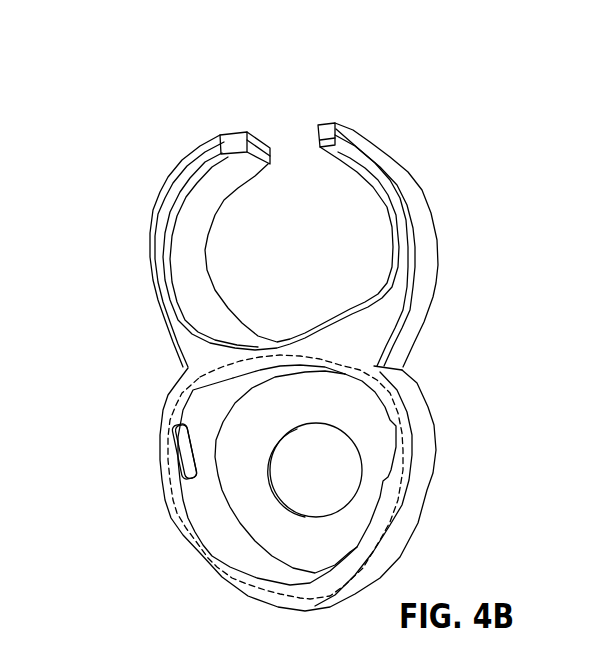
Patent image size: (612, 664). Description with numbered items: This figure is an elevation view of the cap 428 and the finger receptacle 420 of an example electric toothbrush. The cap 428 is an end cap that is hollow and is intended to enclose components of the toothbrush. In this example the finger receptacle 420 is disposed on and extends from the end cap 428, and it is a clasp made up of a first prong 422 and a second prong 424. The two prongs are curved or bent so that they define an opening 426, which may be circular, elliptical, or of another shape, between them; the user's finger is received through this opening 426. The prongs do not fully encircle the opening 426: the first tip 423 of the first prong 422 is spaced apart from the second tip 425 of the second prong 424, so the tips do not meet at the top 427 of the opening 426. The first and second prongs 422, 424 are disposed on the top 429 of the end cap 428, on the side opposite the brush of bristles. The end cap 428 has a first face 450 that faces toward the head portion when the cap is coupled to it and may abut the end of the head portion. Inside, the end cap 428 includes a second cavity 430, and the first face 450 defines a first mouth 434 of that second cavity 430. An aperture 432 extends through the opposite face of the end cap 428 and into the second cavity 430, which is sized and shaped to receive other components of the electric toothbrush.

The finger receptacle 420 is at (182, 365).
The first prong 422 is at (150, 228).
The first tip 423 is at (246, 131).
The second prong 424 is at (367, 142).
The second tip 425 is at (330, 122).
The opening 426 is at (272, 213).
The top of the opening 427 is at (277, 113).
The top of the end cap 429 is at (277, 352).
The first mouth 434 is at (222, 366).
The first face 450 is at (405, 396).
The second cavity 430 is at (268, 527).
The aperture 432 is at (300, 468).
The cap 428 is at (160, 447).